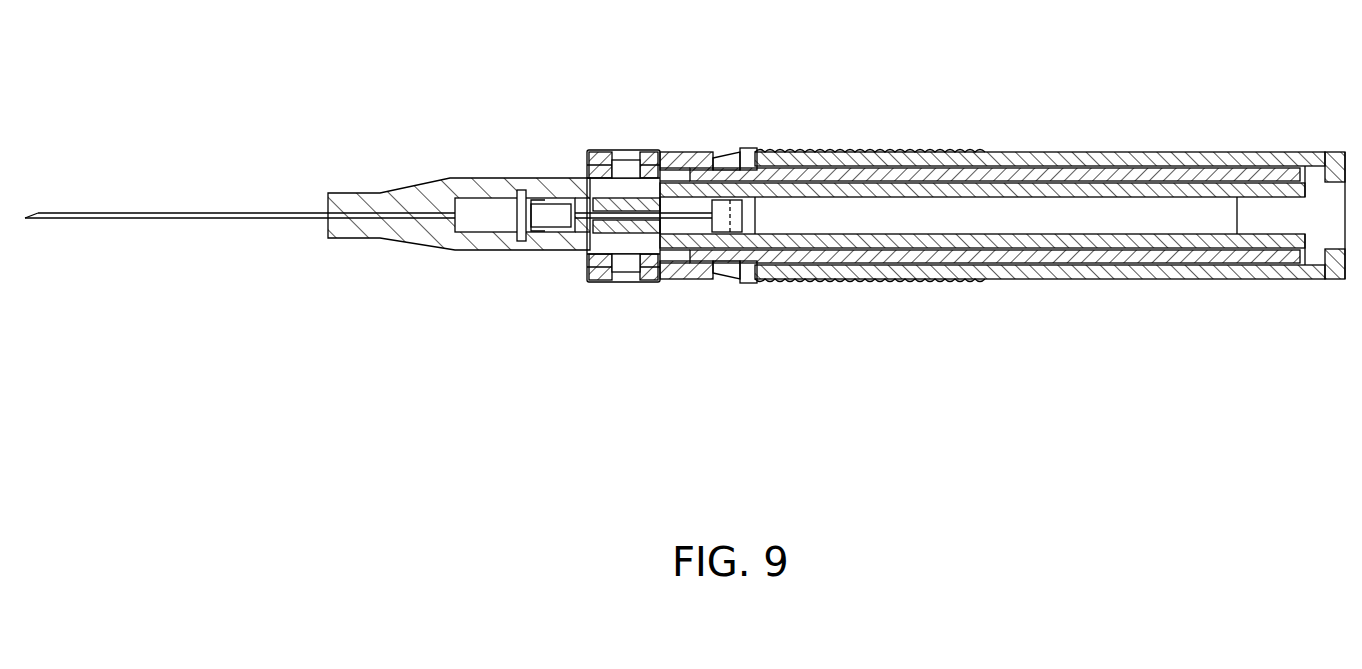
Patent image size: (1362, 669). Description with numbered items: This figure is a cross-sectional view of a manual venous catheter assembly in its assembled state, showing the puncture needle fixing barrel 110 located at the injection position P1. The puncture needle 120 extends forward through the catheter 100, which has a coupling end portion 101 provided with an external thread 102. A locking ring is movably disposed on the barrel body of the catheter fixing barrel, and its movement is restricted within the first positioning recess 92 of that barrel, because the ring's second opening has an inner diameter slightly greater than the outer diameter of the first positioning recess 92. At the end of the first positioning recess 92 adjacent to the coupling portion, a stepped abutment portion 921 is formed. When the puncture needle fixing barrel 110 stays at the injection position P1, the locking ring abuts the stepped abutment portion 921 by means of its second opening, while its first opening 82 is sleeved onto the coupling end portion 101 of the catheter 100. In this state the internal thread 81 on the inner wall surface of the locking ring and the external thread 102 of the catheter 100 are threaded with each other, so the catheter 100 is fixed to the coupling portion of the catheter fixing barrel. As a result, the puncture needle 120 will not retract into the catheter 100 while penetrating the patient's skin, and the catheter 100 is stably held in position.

The puncture needle 120 is at (212, 212).
The catheter 100 is at (366, 178).
The first opening 82 is at (543, 214).
The coupling end portion 101 is at (622, 168).
The internal thread 81 is at (568, 308).
The external thread 102 is at (622, 277).
The first positioning recess 92 is at (949, 195).
The stepped abutment portion 921 is at (663, 278).
The puncture needle fixing barrel 110 is at (983, 150).
The injection position P1 is at (1194, 334).